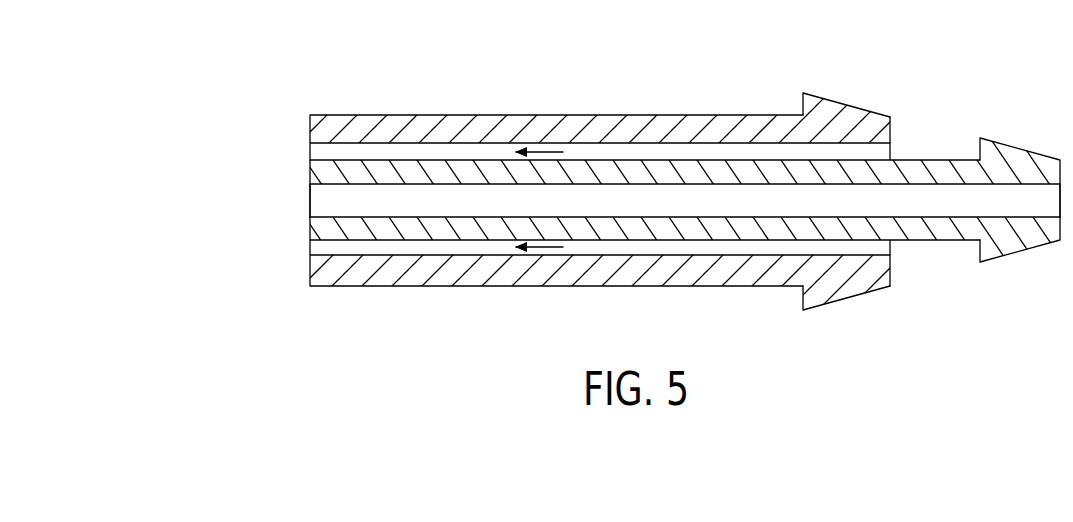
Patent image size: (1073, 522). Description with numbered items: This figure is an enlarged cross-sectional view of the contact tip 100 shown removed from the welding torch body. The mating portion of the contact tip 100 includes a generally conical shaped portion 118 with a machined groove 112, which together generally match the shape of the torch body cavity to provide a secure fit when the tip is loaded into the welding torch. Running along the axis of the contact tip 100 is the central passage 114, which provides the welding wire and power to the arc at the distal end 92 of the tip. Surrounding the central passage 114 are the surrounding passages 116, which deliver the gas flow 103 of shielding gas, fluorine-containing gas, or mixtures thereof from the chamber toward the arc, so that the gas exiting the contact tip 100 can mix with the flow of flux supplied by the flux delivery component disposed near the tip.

The distal end 92 is at (234, 211).
The contact tip 100 is at (751, 67).
The gas flow 103 is at (549, 251).
The machined groove 112 is at (930, 156).
The central passage 114 is at (319, 202).
The surrounding passages 116 is at (378, 150).
The conical shaped portion 118 is at (881, 106).